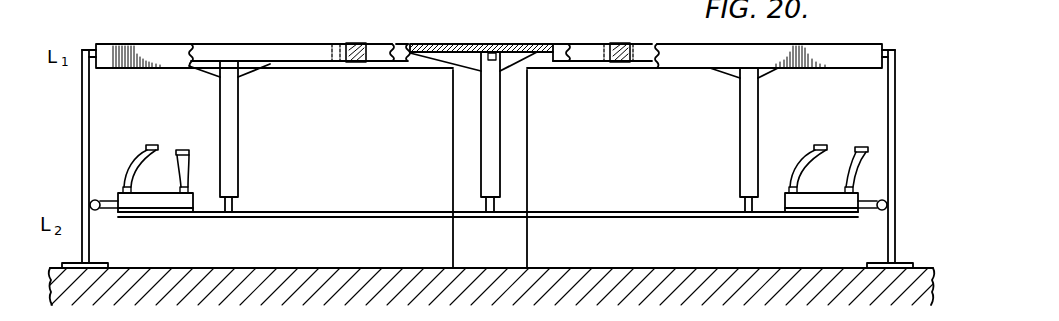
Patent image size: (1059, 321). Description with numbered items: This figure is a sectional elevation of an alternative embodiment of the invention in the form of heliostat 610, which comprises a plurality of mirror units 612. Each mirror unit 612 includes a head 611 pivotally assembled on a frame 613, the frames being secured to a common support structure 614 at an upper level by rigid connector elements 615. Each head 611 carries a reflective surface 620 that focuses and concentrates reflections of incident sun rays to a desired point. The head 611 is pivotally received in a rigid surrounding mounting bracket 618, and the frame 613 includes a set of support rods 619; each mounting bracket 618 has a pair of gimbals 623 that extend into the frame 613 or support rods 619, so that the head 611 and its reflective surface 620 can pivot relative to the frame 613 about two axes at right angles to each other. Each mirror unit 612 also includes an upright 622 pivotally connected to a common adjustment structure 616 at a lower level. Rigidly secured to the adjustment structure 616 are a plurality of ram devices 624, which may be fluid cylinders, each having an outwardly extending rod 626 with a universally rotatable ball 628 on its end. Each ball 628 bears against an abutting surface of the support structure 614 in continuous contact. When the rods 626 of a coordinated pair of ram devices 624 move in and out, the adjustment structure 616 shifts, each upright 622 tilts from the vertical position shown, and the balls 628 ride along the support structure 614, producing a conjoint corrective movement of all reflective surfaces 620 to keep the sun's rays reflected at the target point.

The heliostat 610 is at (151, 37).
The head 611 is at (400, 62).
The mirror unit 612 is at (250, 96).
The frame 613 is at (125, 64).
The support structure 614 is at (90, 118).
The rigid connector element 615 is at (88, 49).
The adjustment structure 616 is at (310, 217).
The mounting bracket 618 is at (228, 45).
The support rod 619 is at (356, 43).
The reflective surface 620 is at (470, 43).
The upright 622 is at (239, 161).
The gimbal 623 is at (349, 43).
The ram device 624 is at (168, 203).
The rod 626 is at (109, 200).
The ball 628 is at (97, 210).